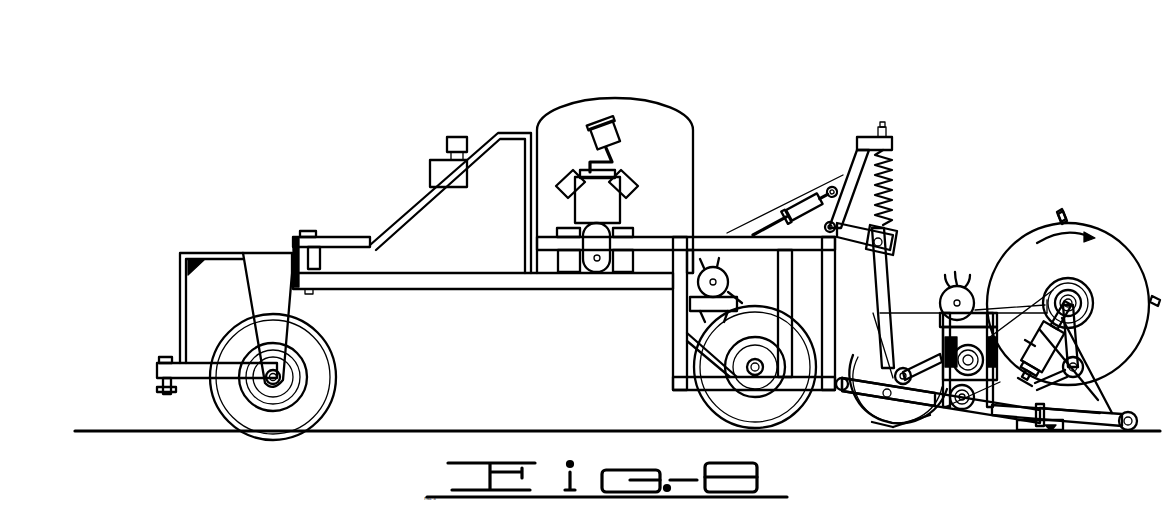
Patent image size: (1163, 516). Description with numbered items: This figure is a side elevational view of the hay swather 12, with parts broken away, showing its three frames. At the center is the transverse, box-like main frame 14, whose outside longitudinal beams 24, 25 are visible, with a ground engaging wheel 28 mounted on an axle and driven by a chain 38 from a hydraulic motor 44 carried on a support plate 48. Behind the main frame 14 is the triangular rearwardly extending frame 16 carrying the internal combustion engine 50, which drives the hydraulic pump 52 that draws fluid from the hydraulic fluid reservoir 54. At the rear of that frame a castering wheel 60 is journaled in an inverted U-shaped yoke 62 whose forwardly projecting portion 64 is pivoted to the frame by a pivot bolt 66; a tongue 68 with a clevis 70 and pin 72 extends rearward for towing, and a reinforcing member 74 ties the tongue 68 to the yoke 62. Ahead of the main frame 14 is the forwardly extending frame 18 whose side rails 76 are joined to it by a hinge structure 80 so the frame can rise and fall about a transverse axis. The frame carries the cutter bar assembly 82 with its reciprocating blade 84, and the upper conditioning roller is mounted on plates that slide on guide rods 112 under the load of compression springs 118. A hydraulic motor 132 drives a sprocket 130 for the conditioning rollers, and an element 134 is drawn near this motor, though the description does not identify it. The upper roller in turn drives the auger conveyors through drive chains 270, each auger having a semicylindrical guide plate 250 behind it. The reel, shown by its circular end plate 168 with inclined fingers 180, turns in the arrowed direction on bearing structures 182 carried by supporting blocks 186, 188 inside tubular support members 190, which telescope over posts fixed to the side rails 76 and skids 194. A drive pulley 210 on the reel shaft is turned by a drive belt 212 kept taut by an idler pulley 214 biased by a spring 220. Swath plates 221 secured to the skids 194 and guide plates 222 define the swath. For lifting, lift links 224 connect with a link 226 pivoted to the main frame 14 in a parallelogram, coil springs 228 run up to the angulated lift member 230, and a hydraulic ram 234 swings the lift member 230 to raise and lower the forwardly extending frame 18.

The hay swather 12 is at (742, 135).
The main frame 14 is at (665, 338).
The rearwardly extending frame 16 is at (490, 294).
The forwardly extending frame 18 is at (952, 430).
The outside longitudinal beam 24 is at (740, 250).
The outside longitudinal beam 25 is at (797, 390).
The ground engaging wheel 28 is at (713, 402).
The chain 38 is at (730, 283).
The hydraulic motor 44 is at (693, 280).
The support plate 48 is at (680, 318).
The internal combustion engine 50 is at (610, 208).
The hydraulic pump 52 is at (593, 272).
The hydraulic fluid reservoir 54 is at (430, 168).
The castering wheel 60 is at (323, 372).
The yoke 62 is at (285, 300).
The forwardly projecting portion 64 is at (315, 247).
The pivot bolt 66 is at (307, 231).
The tongue 68 is at (200, 378).
The clevis 70 is at (157, 366).
The pin 72 is at (165, 357).
The reinforcing member 74 is at (180, 285).
The side rail 76 is at (850, 392).
The hinge structure 80 is at (843, 367).
The cutter bar assembly 82 is at (1038, 440).
The reciprocating blade 84 is at (1052, 431).
The guide rod 112 is at (923, 420).
The compression spring 118 is at (985, 358).
The sprocket 130 is at (950, 298).
The hydraulic motor 132 is at (962, 272).
The motor mount 134 is at (935, 310).
The circular end plate 168 is at (1100, 240).
The finger 180 is at (1065, 215).
The bearing structure 182 is at (1047, 313).
The supporting block 186 is at (1045, 317).
The supporting block 188 is at (1080, 345).
The tubular support member 190 is at (1027, 380).
The skid 194 is at (1090, 426).
The drive pulley 210 is at (1075, 285).
The drive belt 212 is at (1090, 325).
The idler pulley 214 is at (1100, 383).
The spring 220 is at (1030, 343).
The swath plate 221 is at (1100, 409).
The guide plate 222 is at (905, 352).
The lift link 224 is at (892, 257).
The link 226 is at (870, 245).
The coil spring 228 is at (890, 175).
The angulated lift member 230 is at (858, 150).
The hydraulic ram 234 is at (760, 212).
The guide plate 250 is at (890, 428).
The drive chain 270 is at (878, 320).